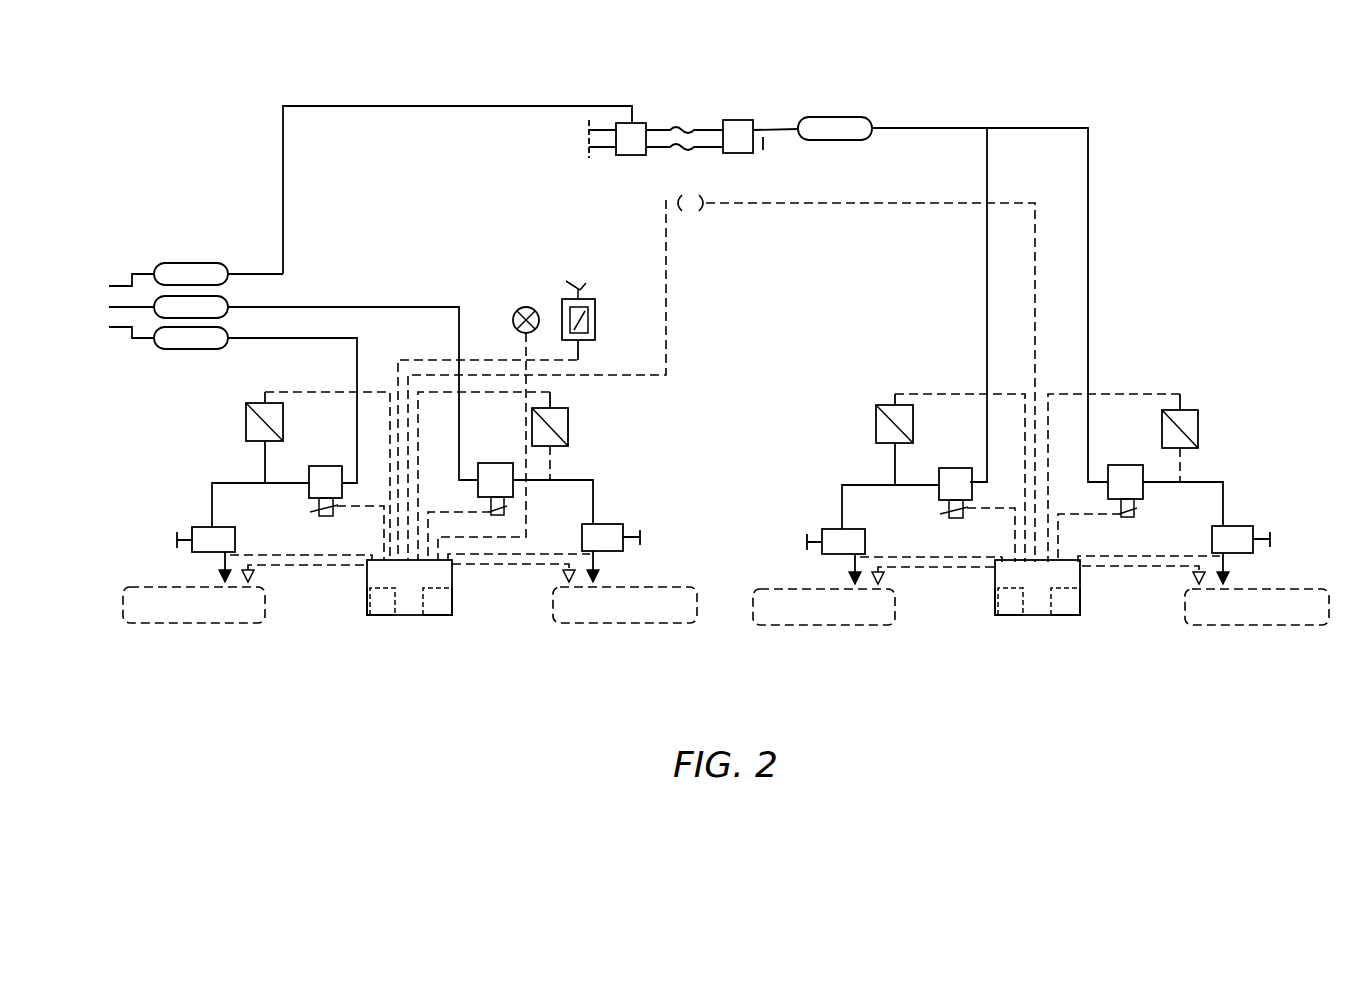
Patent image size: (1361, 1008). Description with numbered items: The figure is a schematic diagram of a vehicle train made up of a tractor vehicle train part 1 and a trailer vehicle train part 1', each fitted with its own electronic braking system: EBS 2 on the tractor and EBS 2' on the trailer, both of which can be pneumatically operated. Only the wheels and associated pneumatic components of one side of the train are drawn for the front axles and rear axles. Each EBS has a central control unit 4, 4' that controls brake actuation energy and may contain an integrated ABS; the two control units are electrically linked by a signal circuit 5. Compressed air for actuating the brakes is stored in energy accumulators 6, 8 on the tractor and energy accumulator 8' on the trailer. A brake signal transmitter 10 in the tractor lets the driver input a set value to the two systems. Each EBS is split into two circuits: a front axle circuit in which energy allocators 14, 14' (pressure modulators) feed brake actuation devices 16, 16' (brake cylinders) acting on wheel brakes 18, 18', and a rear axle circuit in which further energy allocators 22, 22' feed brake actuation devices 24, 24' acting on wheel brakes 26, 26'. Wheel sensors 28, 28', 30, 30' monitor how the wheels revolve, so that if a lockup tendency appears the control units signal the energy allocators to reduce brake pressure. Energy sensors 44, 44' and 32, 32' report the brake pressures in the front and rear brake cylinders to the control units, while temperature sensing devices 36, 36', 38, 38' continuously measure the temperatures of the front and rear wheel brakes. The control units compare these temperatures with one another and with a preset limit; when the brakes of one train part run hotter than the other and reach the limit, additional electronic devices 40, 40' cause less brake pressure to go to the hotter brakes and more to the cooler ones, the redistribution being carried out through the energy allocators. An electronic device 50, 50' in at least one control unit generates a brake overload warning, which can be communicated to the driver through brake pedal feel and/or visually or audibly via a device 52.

The tractor vehicle train part 1 is at (401, 469).
The EBS 2 is at (401, 422).
The central control unit 4 is at (409, 606).
The signal circuit 5 is at (632, 376).
The energy accumulator 6 is at (228, 314).
The energy accumulator 8 is at (191, 328).
The brake signal transmitter 10 is at (595, 312).
The energy allocator 14 is at (330, 477).
The brake actuation device 16 is at (203, 523).
The wheel brake 18 is at (185, 589).
The energy allocator 22 is at (495, 473).
The brake actuation device 24 is at (616, 524).
The wheel brake 26 is at (625, 587).
The wheel sensor 28 is at (259, 577).
The wheel sensor 30 is at (552, 575).
The energy sensor 32 is at (567, 423).
The temperature measuring device 36 is at (208, 569).
The temperature measuring device 38 is at (610, 575).
The additional electronic device 40 is at (454, 614).
The energy sensor 44 is at (241, 421).
The electronic device 50 is at (362, 614).
The warning device 52 is at (522, 307).
The trailer vehicle train part 1' is at (1030, 554).
The EBS 2' is at (959, 389).
The central control unit 4' is at (1037, 606).
The energy accumulator 8' is at (860, 102).
The energy allocator 14' is at (962, 479).
The brake actuation device 16' is at (832, 525).
The wheel brake 18' is at (813, 591).
The energy allocator 22' is at (1124, 475).
The brake actuation device 24' is at (1248, 526).
The wheel brake 26' is at (1257, 589).
The wheel sensor 28' is at (891, 579).
The wheel sensor 30' is at (1181, 577).
The energy sensor 32' is at (1199, 425).
The temperature measuring device 36' is at (837, 571).
The temperature measuring device 38' is at (1242, 577).
The additional electronic device 40' is at (1083, 614).
The energy sensor 44' is at (870, 423).
The electronic device 50' is at (990, 614).